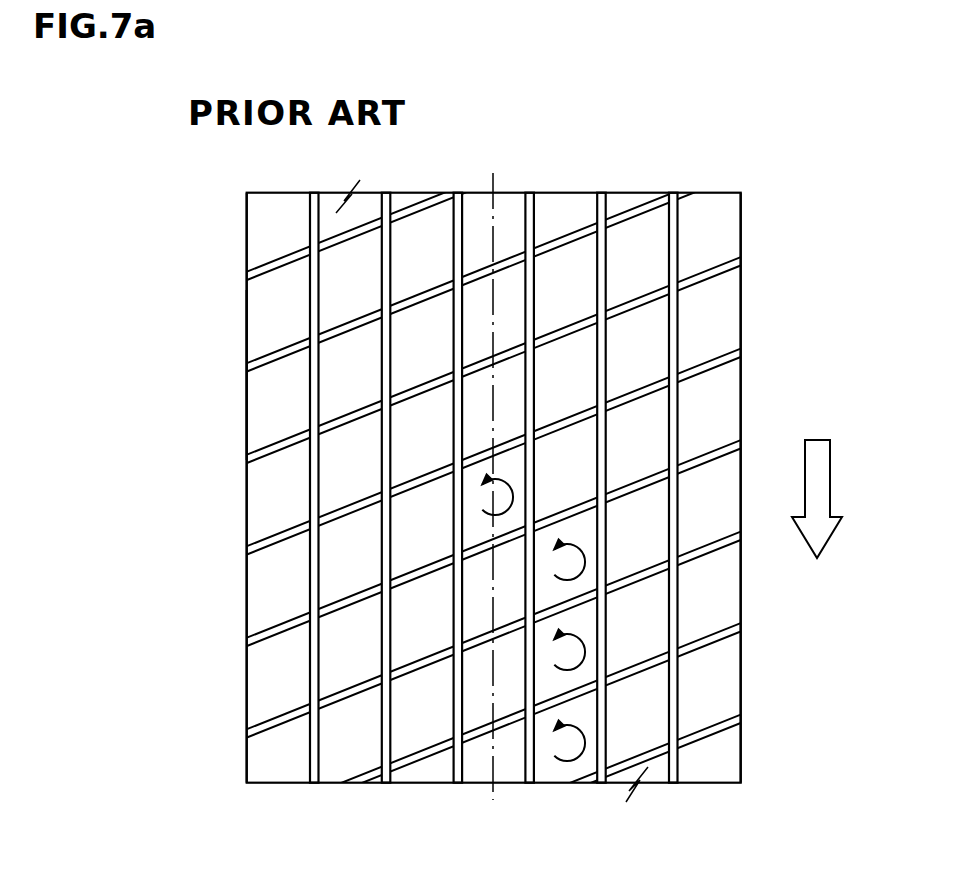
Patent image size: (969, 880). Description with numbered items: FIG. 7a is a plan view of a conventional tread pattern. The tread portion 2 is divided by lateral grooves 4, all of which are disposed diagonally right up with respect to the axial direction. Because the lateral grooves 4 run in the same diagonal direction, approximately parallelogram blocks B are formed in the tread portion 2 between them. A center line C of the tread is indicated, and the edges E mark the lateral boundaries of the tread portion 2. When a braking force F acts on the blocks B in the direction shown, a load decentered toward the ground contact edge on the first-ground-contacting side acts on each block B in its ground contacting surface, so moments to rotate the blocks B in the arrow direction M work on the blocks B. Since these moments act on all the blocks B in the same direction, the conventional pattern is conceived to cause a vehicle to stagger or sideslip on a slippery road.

The tread portion 2 is at (698, 173).
The lateral grooves 4 is at (567, 240).
The edges of the screen E is at (247, 224).
The blocks B is at (267, 399).
The center line C is at (493, 474).
The arrow direction M is at (578, 760).
The braking force F is at (817, 518).